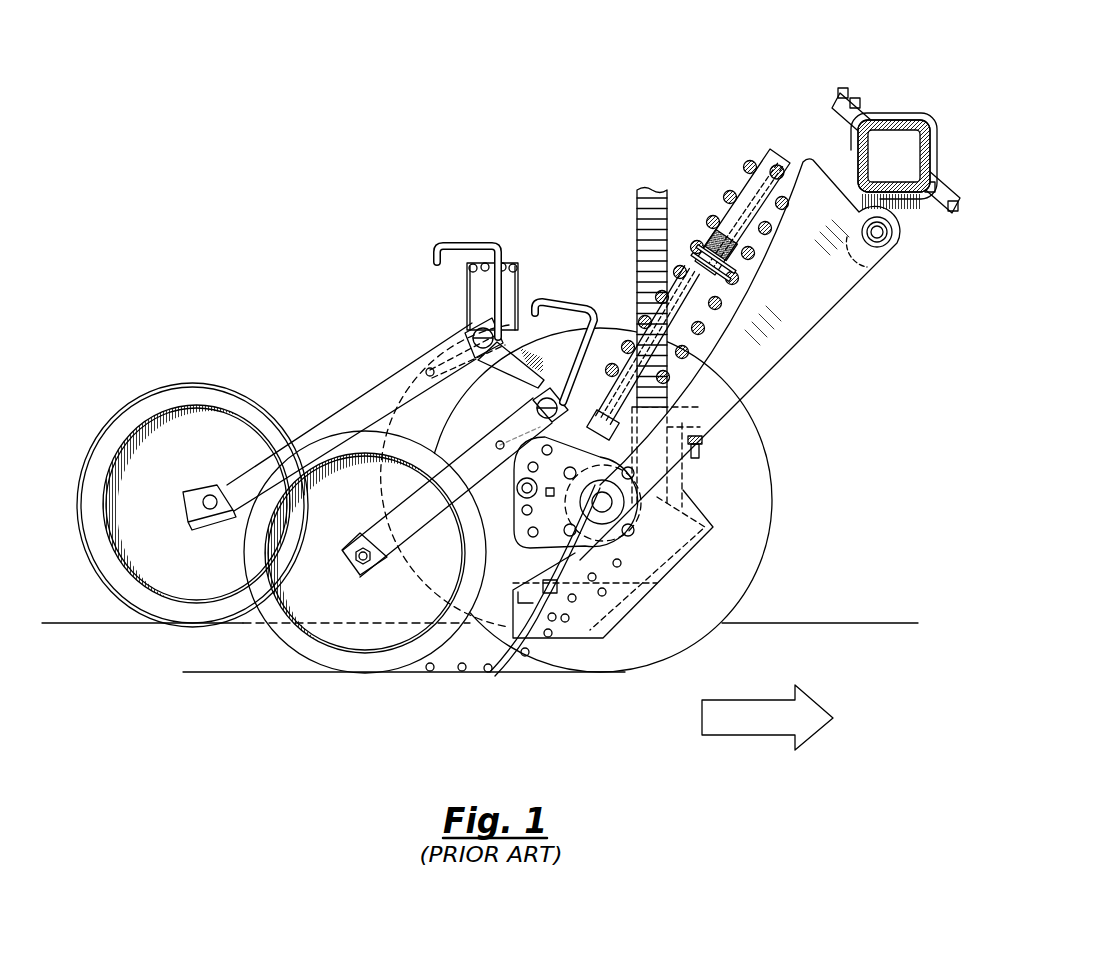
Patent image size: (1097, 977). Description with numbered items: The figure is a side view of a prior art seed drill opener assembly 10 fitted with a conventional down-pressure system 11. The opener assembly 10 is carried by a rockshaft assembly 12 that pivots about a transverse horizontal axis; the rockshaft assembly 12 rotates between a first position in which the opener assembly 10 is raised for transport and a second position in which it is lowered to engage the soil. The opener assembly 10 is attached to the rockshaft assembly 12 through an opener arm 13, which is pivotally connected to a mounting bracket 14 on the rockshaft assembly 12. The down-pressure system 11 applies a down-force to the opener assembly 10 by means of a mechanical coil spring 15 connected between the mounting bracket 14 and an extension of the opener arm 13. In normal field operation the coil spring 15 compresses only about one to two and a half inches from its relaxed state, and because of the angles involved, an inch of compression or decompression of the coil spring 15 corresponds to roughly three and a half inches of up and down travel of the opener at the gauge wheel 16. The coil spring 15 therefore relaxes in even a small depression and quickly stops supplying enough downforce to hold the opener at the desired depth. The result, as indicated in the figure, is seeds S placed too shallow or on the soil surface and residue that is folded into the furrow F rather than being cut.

The seed drill opener assembly 10 is at (725, 68).
The down-pressure system 11 is at (727, 173).
The rockshaft assembly 12 is at (913, 113).
The opener arm 13 is at (786, 325).
The mounting bracket 14 is at (912, 222).
The mechanical coil spring 15 is at (715, 215).
The gauge wheel 16 is at (422, 422).
The furrow F is at (258, 667).
The seeds S is at (463, 675).